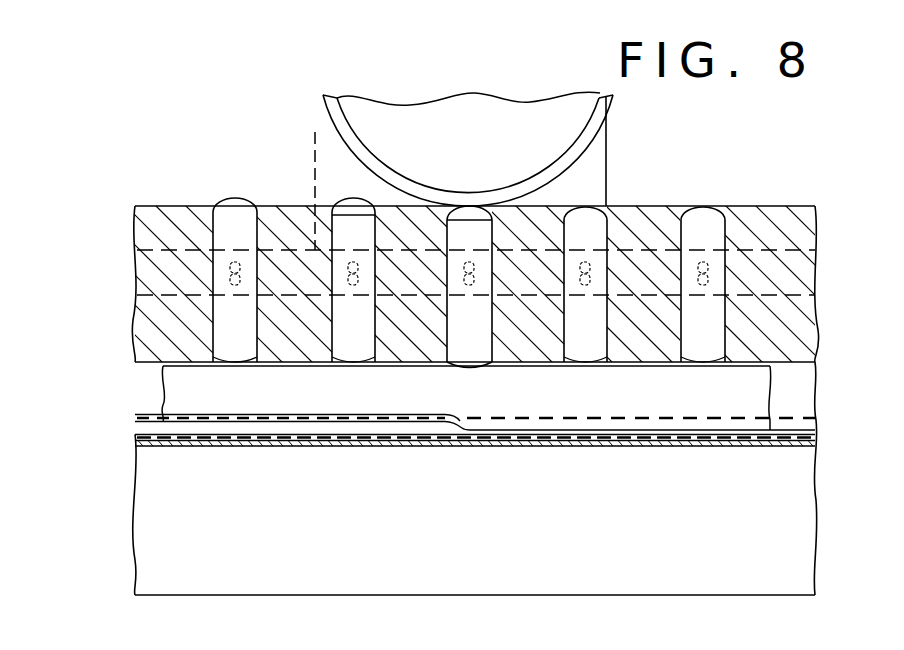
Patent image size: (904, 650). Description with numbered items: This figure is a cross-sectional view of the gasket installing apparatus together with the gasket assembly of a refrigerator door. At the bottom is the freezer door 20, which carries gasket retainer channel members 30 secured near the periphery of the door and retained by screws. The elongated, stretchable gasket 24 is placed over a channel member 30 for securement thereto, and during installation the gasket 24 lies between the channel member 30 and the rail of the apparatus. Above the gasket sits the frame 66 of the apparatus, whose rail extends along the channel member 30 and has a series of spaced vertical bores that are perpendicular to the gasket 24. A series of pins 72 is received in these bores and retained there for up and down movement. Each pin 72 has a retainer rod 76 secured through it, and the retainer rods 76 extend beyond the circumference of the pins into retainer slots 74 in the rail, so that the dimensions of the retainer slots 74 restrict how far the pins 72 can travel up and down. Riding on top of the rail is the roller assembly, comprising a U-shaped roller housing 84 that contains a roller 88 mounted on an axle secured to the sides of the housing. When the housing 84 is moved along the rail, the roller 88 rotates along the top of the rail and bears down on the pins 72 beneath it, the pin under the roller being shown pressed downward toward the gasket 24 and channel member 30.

The freezer door 20 is at (148, 488).
The gasket 24 is at (760, 398).
The gasket retainer channel member 30 is at (149, 414).
The frame 66 is at (806, 325).
The pin 72 is at (707, 218).
The retainer slot 74 is at (315, 132).
The retainer rod 76 is at (353, 277).
The roller housing 84 is at (606, 187).
The roller 88 is at (602, 117).